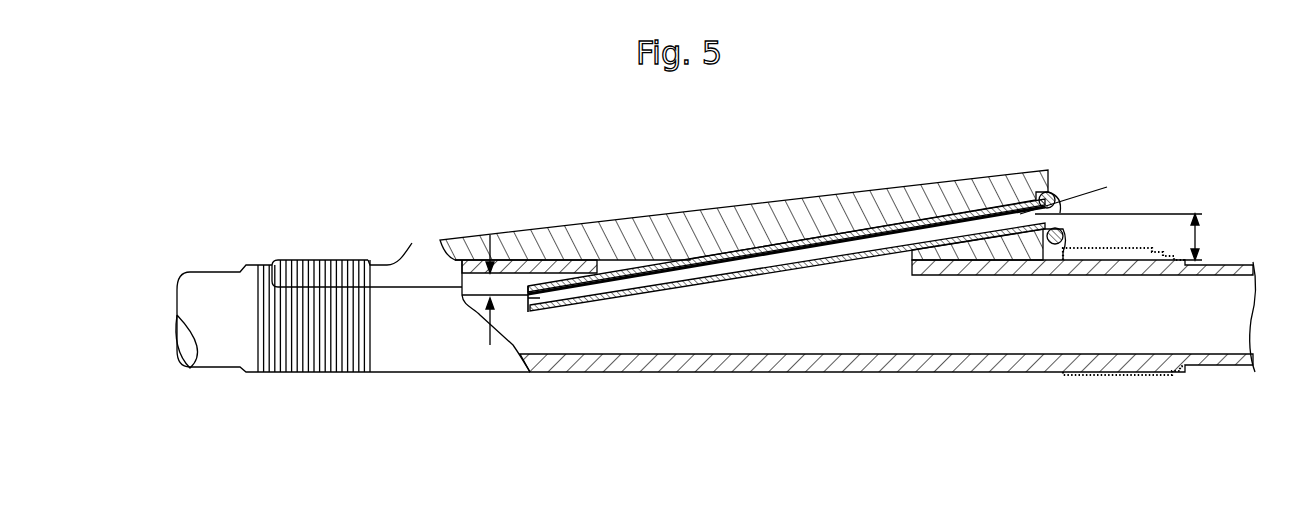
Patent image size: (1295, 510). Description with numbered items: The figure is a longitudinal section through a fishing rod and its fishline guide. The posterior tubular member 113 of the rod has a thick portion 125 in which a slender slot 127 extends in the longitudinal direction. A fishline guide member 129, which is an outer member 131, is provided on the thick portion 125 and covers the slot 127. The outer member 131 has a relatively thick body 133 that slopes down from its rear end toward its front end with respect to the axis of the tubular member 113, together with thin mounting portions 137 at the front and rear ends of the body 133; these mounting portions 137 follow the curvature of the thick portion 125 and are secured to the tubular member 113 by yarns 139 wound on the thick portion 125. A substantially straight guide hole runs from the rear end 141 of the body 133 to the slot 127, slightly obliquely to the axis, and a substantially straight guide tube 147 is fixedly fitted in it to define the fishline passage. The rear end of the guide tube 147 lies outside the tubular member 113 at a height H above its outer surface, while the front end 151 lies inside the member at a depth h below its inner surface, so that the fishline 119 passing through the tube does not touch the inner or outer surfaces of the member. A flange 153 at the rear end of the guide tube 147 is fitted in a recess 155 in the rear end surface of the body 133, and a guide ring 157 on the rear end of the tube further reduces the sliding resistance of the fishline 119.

The posterior tubular member 113 is at (888, 323).
The fishline 119 is at (1107, 187).
The thick portion 125 is at (750, 364).
The slot 127 is at (893, 272).
The fishline guide member 129 is at (630, 218).
The outer member 131 is at (744, 181).
The body 133 is at (947, 192).
The mounting portions 137 is at (316, 268).
The yarns 139 is at (312, 358).
The rear end of the body 141 is at (993, 203).
The guide tube 147 is at (660, 292).
The front end of the guide tube 151 is at (786, 324).
The flange 153 is at (1060, 198).
The recess 155 is at (1050, 244).
The guide ring 157 is at (1053, 192).
The height H is at (1118, 237).
The depth h is at (489, 327).